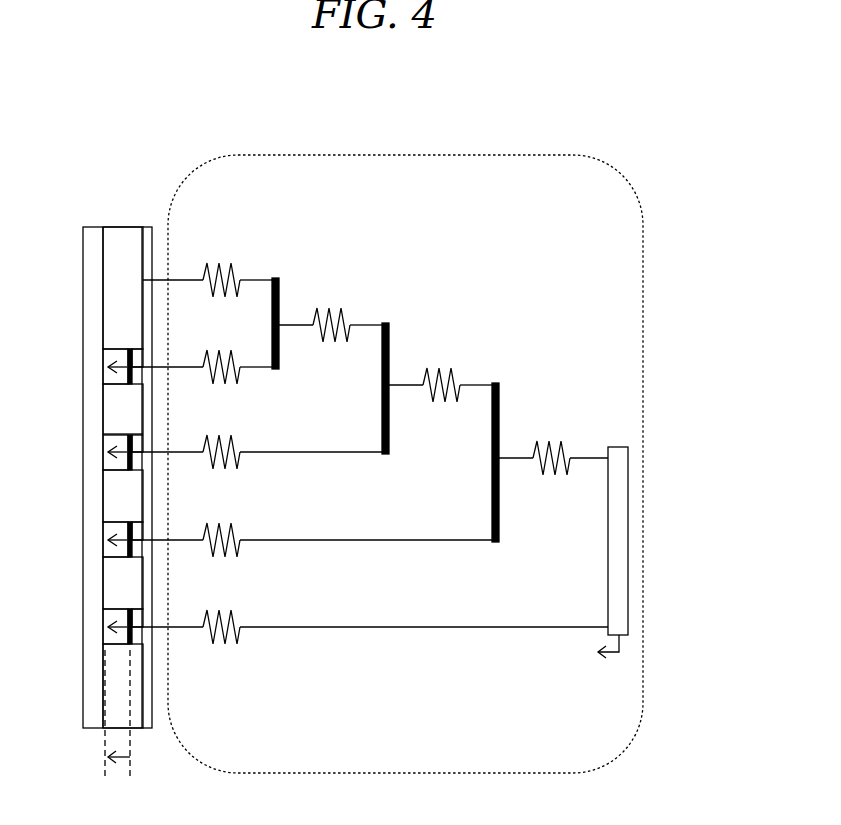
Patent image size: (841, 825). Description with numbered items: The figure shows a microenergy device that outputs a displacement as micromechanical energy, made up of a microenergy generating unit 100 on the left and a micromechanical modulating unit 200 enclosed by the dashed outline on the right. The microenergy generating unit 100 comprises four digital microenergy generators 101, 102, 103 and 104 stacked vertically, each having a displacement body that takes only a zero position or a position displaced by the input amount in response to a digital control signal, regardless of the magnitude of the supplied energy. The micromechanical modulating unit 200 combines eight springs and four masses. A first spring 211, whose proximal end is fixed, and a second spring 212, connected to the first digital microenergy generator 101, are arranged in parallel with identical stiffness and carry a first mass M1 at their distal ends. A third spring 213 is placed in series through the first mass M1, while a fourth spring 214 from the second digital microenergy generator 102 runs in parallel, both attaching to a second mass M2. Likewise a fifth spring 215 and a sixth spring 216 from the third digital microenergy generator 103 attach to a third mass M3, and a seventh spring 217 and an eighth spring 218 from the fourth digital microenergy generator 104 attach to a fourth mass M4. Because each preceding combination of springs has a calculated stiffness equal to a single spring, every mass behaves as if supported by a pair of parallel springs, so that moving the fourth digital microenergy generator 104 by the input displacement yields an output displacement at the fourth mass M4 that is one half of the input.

The microenergy generating unit 100 is at (115, 226).
The first digital microenergy generator 101 is at (101, 371).
The second digital microenergy generator 102 is at (101, 455).
The third digital microenergy generator 103 is at (101, 542).
The fourth digital microenergy generator 104 is at (101, 629).
The micromechanical modulating unit 200 is at (405, 155).
The first spring 211 is at (207, 249).
The second spring 212 is at (212, 362).
The third spring 213 is at (330, 292).
The fourth spring 214 is at (257, 448).
The fifth spring 215 is at (440, 352).
The sixth spring 216 is at (312, 533).
The seventh spring 217 is at (553, 426).
The eighth spring 218 is at (370, 625).
The first mass M1 is at (278, 340).
The second mass M2 is at (389, 418).
The third mass M3 is at (499, 515).
The fourth mass M4 is at (628, 563).